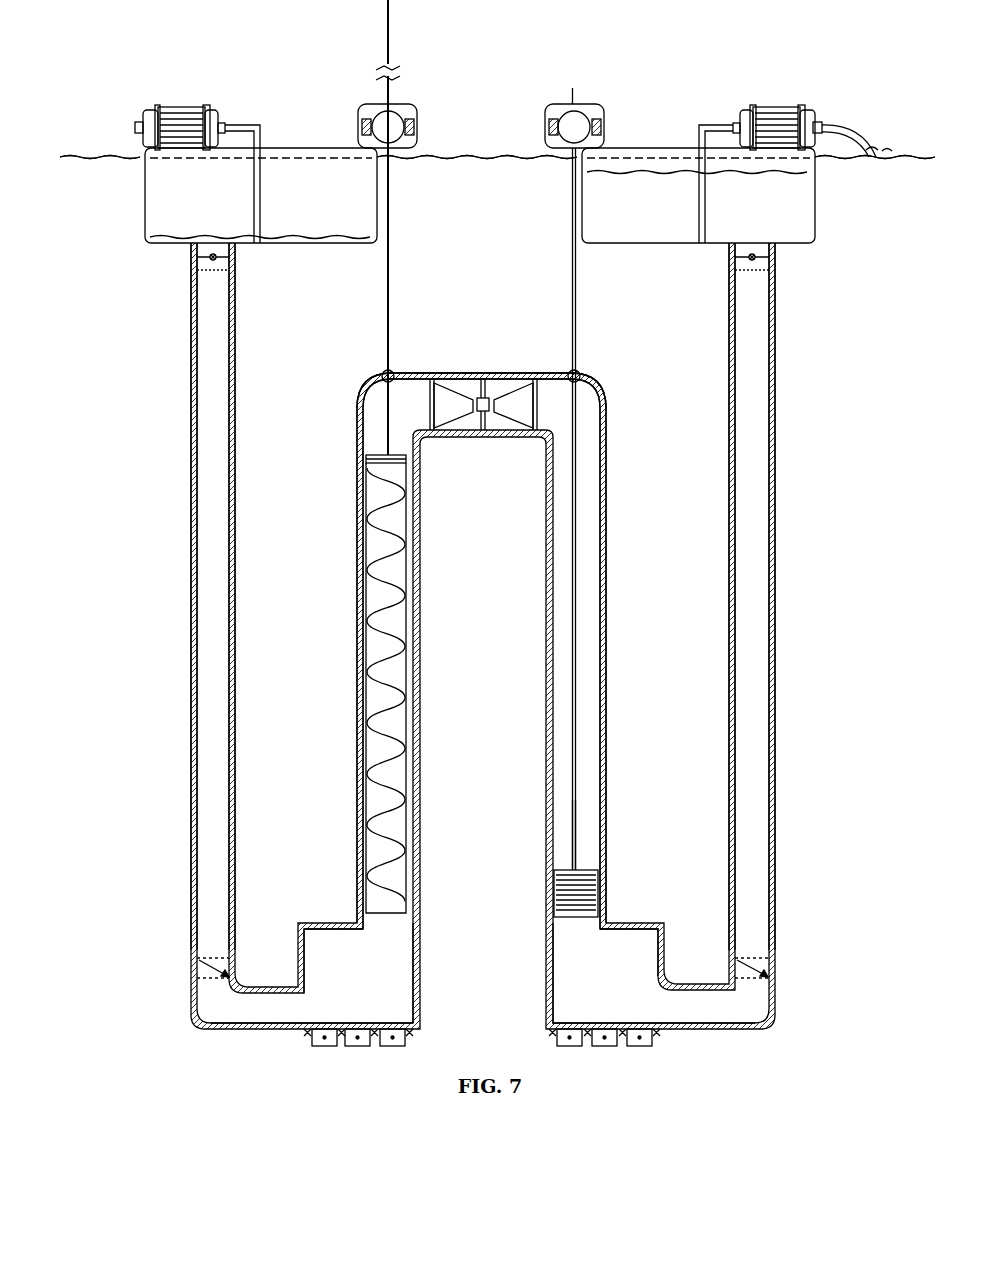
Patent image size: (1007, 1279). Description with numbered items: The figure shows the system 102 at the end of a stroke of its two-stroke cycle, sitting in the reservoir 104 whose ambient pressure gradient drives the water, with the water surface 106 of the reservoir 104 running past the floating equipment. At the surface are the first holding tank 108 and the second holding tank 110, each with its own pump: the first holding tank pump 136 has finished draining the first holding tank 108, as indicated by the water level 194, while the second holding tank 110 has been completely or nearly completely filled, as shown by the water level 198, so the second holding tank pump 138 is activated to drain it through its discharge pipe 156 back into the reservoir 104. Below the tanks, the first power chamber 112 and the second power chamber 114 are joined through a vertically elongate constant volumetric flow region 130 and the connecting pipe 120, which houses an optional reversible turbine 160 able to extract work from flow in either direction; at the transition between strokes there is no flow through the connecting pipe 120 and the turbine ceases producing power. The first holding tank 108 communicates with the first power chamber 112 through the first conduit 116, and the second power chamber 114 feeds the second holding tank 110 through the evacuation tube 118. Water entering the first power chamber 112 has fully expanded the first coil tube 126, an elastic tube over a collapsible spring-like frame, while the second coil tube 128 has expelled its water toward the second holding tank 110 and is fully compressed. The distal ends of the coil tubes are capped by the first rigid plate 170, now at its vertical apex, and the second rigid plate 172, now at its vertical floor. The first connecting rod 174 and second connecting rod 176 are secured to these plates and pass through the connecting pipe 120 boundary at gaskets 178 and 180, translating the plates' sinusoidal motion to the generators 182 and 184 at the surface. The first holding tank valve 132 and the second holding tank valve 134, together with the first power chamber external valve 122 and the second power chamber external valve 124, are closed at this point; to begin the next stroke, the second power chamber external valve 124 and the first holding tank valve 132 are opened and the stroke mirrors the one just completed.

The system 102 is at (170, 1068).
The reservoir 104 is at (447, 208).
The water surface 106 is at (507, 157).
The first holding tank 108 is at (145, 187).
The second holding tank 110 is at (818, 207).
The first power chamber 112 is at (382, 958).
The second power chamber 114 is at (592, 967).
The first conduit 116 is at (190, 522).
The evacuation tube 118 is at (776, 540).
The connecting pipe 120 is at (403, 374).
The first power chamber external valve 122 is at (305, 1042).
The second power chamber external valve 124 is at (593, 1042).
The first coil tube 126 is at (378, 636).
The second coil tube 128 is at (580, 888).
The constant volumetric flow region 130 is at (375, 422).
The first holding tank valve 132 is at (192, 257).
The second holding tank valve 134 is at (774, 257).
The first holding tank pump 136 is at (173, 105).
The second holding tank pump 138 is at (790, 106).
The discharge pipe 156 is at (852, 124).
The reversible turbine 160 is at (512, 398).
The first rigid plate 170 is at (375, 450).
The second rigid plate 172 is at (583, 868).
The first connecting rod 174 is at (386, 266).
The second connecting rod 176 is at (577, 598).
The gasket 178 is at (385, 377).
The gasket 180 is at (578, 377).
The generator 182 is at (358, 112).
The generator 184 is at (603, 106).
The water level 194 is at (282, 238).
The water level 198 is at (677, 176).